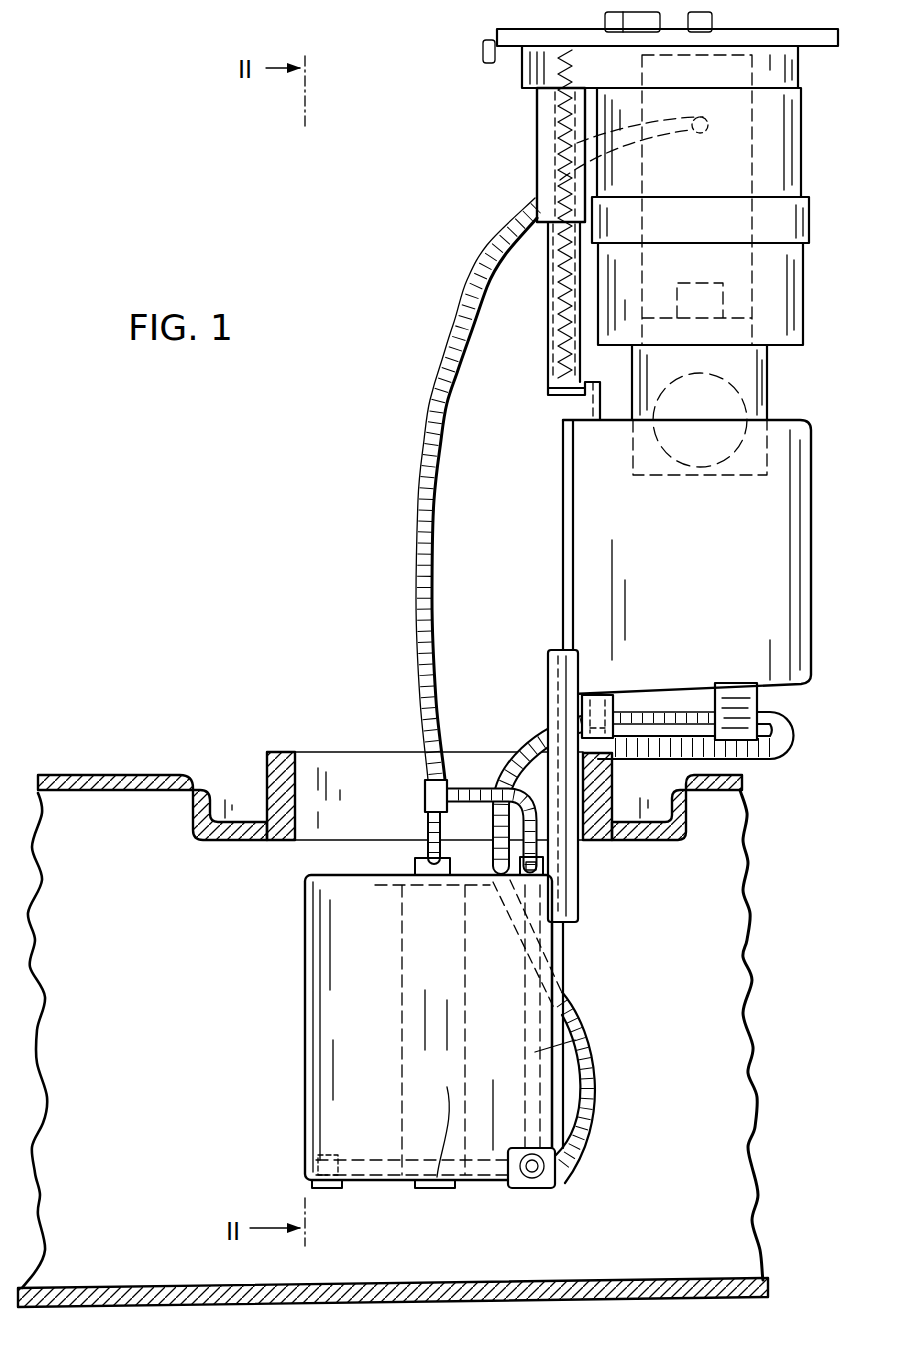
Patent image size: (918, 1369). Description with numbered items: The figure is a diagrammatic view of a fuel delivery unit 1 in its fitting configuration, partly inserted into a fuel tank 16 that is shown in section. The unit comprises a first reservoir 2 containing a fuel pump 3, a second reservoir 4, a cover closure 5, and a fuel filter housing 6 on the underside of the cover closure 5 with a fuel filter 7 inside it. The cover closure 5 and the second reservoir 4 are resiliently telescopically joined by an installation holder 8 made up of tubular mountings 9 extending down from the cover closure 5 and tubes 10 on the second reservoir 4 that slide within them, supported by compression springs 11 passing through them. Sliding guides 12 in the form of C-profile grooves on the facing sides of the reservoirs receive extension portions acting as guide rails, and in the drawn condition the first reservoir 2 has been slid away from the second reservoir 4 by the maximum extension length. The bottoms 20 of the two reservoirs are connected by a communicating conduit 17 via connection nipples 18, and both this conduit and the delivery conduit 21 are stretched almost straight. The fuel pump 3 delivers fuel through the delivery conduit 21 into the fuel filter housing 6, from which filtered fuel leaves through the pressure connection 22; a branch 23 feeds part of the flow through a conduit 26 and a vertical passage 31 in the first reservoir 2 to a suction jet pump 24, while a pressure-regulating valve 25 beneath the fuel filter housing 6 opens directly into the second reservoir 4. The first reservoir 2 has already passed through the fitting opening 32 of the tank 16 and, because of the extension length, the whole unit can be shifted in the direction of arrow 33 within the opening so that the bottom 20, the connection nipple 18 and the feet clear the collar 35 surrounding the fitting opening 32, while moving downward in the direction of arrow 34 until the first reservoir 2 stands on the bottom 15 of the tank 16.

The fuel delivery unit 1 is at (830, 452).
The first reservoir 2 is at (295, 1012).
The fuel pump 3 is at (433, 1193).
The second reservoir 4 is at (783, 552).
The cover closure 5 is at (778, 68).
The fuel filter housing 6 is at (782, 170).
The fuel filter 7 is at (737, 270).
The installation holder 8 is at (548, 383).
The tubular mountings 9 is at (537, 140).
The tubes 10 is at (547, 313).
The compression springs 11 is at (547, 345).
The sliding guides 12 is at (567, 556).
The bottom of the tank 15 is at (533, 1282).
The fuel tank 16 is at (112, 775).
The communicating conduit 17 is at (595, 1093).
The connection nipples 18 is at (607, 717).
The bottoms of the reservoirs 20 is at (780, 690).
The delivery conduit 21 is at (423, 577).
The pressure connection 22 is at (707, 20).
The branch 23 is at (428, 795).
The suction jet pump 24 is at (557, 1177).
The pressure-regulating valve 25 is at (728, 408).
The conduit 26 is at (472, 790).
The passage 31 is at (533, 1053).
The fitting opening 32 is at (318, 750).
The arrow 33 is at (462, 690).
The arrow 34 is at (518, 682).
The collar 35 is at (603, 777).